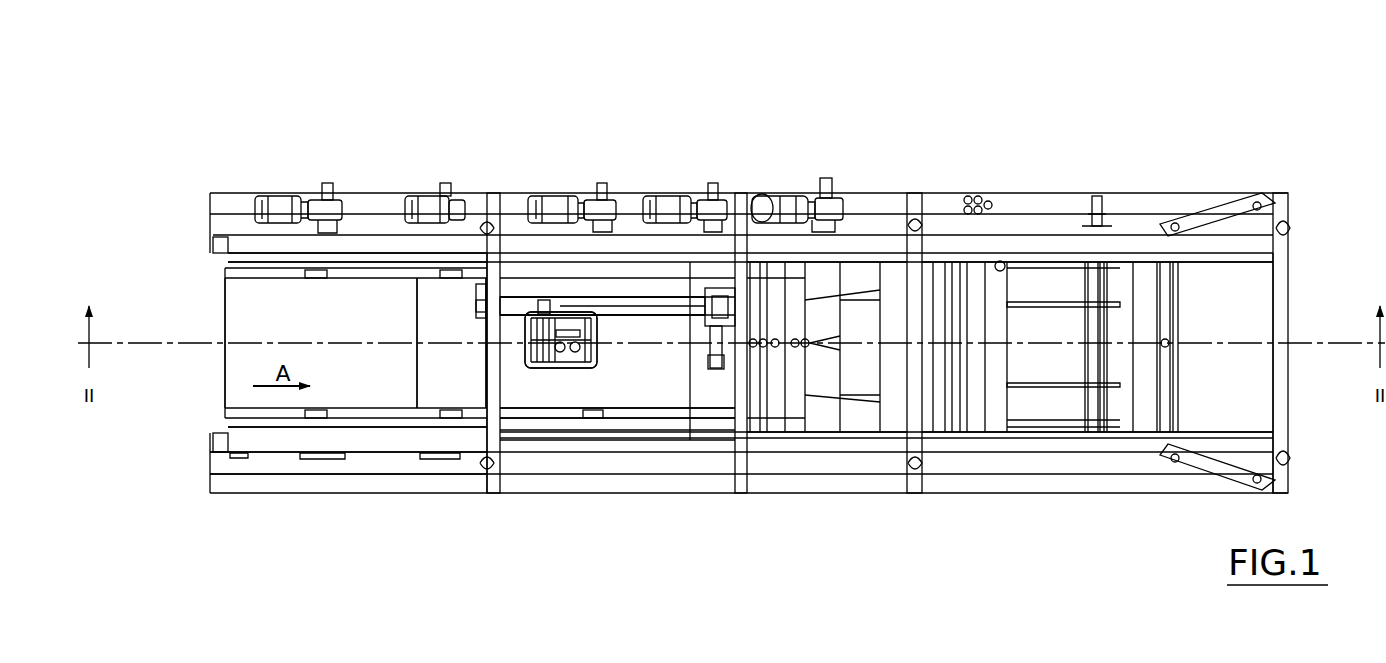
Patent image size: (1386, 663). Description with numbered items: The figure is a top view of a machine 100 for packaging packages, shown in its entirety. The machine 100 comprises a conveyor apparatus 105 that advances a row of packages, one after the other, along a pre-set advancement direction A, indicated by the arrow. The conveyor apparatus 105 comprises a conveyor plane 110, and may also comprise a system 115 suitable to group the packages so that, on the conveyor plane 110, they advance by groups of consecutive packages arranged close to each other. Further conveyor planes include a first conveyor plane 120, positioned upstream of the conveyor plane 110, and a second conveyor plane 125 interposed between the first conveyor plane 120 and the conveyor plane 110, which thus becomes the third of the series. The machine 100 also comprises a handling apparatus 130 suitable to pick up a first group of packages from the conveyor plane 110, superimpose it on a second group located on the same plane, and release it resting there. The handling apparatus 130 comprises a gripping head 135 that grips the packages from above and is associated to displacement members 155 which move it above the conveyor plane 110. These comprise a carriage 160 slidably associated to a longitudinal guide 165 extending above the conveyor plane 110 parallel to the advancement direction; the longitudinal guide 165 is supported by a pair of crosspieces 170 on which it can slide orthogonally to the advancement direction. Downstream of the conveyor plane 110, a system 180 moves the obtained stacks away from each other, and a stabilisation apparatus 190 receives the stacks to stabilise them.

The machine 100 is at (1145, 137).
The conveyor apparatus 105 is at (216, 297).
The conveyor plane 110 is at (608, 395).
The system suitable to group the packages 115 is at (375, 410).
The first conveyor plane 120 is at (292, 300).
The second conveyor plane 125 is at (441, 300).
The handling apparatus 130 is at (568, 383).
The gripping head 135 is at (562, 322).
The displacement members 155 is at (634, 287).
The carriage 160 is at (532, 362).
The longitudinal guide 165 is at (636, 315).
The crosspieces 170 is at (495, 240).
The system for moving the stacks of packages away from each other 180 is at (763, 442).
The stabilisation apparatus 190 is at (1040, 408).